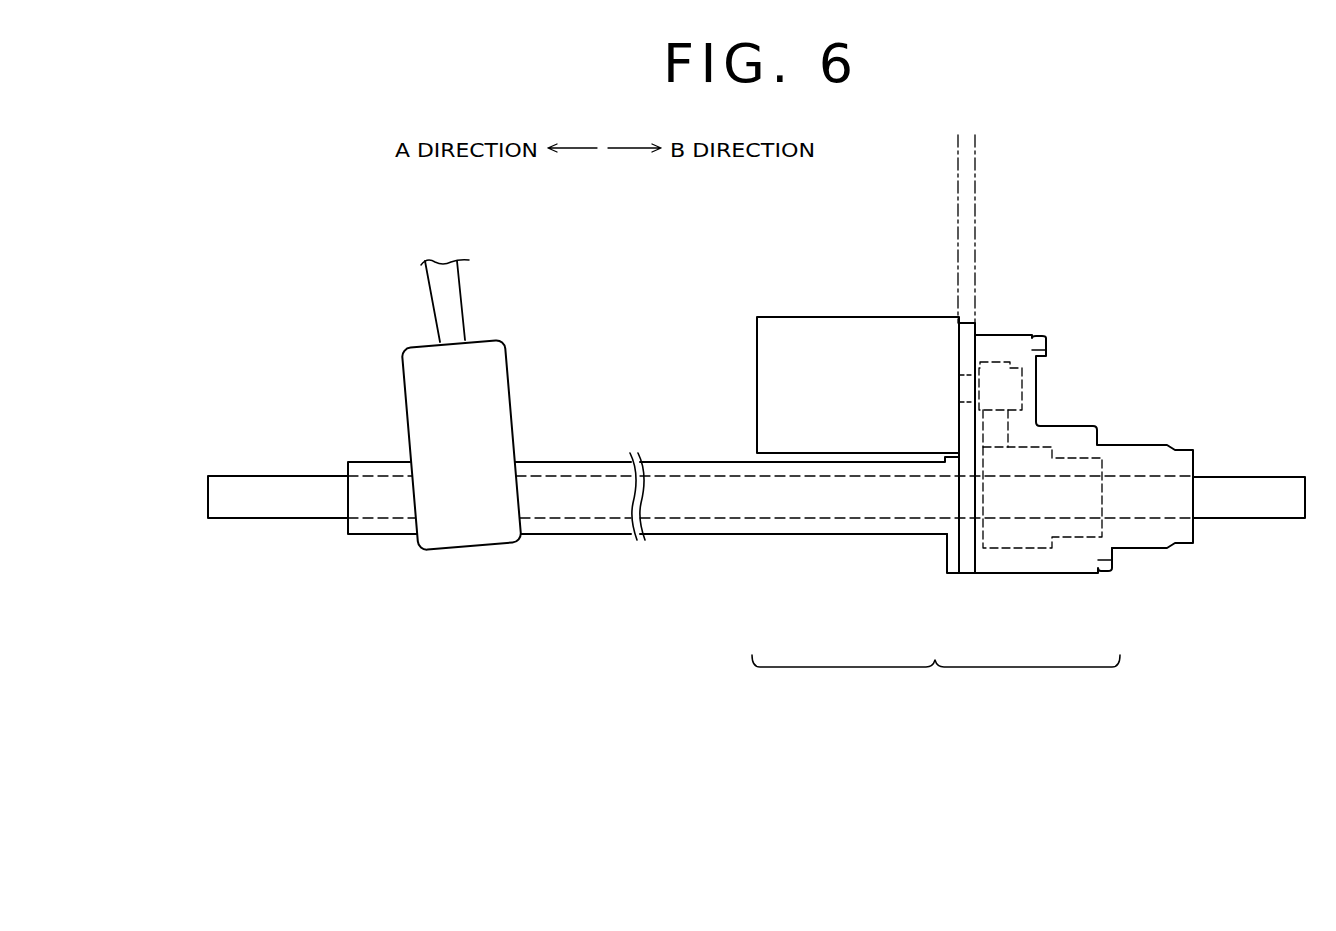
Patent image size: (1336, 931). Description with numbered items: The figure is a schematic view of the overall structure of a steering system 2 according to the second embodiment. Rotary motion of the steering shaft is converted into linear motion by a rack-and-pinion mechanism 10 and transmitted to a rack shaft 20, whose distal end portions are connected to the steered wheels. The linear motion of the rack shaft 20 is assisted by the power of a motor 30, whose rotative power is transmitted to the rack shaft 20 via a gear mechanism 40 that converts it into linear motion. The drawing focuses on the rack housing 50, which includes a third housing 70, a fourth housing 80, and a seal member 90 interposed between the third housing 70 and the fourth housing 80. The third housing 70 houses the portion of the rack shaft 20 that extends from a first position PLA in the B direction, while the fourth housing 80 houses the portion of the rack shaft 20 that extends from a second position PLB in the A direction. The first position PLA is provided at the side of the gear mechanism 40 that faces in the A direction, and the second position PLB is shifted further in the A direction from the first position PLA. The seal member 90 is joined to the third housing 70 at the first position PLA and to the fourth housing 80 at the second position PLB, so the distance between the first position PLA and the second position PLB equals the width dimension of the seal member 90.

The steering system 2 is at (1147, 294).
The rack-and-pinion mechanism 10 is at (510, 375).
The rack shaft 20 is at (1245, 519).
The motor 30 is at (854, 315).
The gear mechanism 40 is at (1062, 442).
The rack housing 50 is at (936, 679).
The third housing 70 is at (1065, 574).
The fourth housing 80 is at (770, 535).
The seal member 90 is at (968, 574).
The first position PLA is at (976, 180).
The second position PLB is at (957, 179).